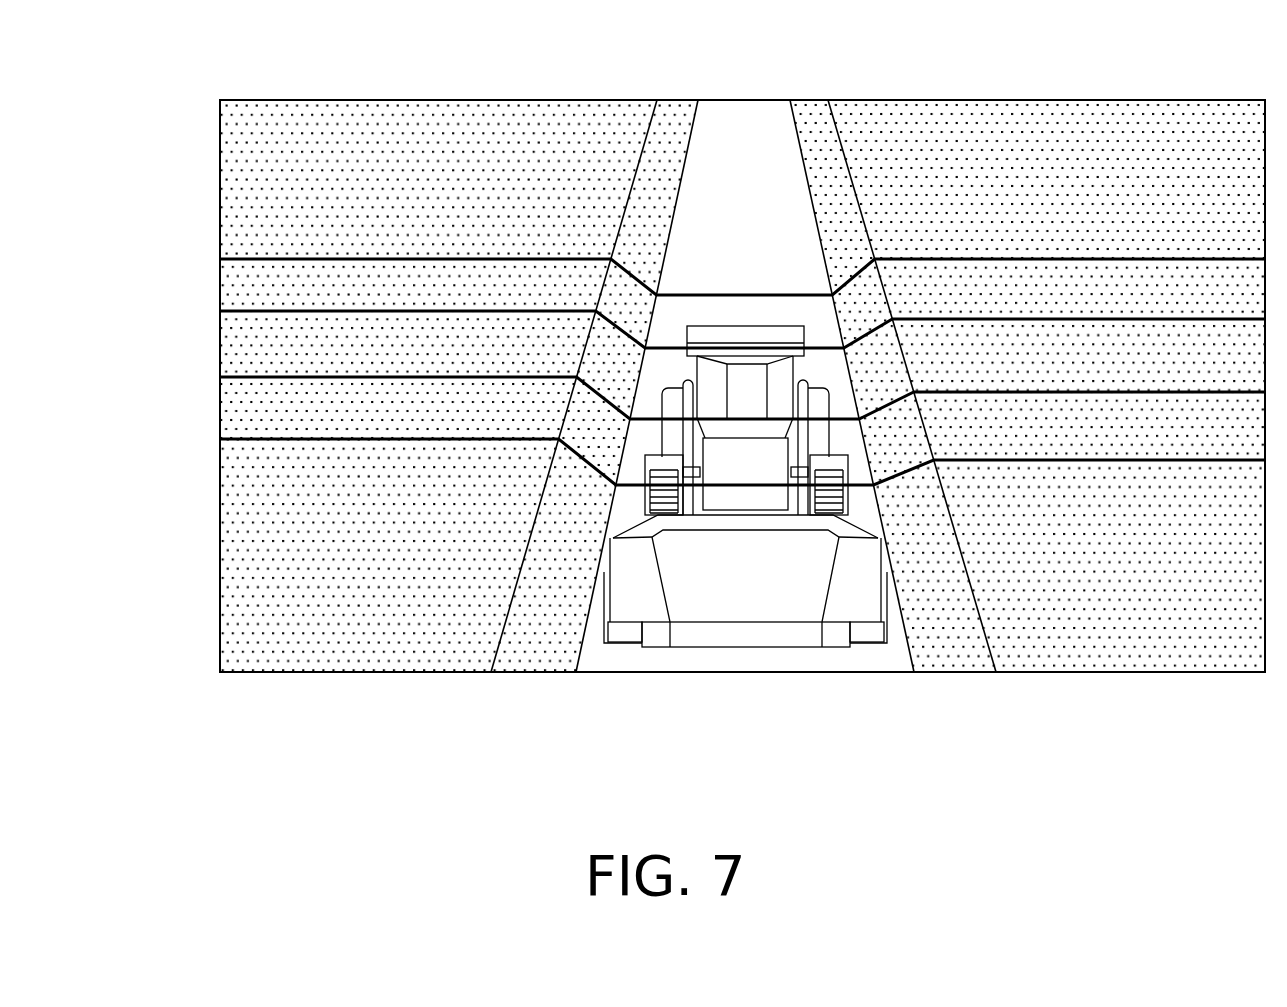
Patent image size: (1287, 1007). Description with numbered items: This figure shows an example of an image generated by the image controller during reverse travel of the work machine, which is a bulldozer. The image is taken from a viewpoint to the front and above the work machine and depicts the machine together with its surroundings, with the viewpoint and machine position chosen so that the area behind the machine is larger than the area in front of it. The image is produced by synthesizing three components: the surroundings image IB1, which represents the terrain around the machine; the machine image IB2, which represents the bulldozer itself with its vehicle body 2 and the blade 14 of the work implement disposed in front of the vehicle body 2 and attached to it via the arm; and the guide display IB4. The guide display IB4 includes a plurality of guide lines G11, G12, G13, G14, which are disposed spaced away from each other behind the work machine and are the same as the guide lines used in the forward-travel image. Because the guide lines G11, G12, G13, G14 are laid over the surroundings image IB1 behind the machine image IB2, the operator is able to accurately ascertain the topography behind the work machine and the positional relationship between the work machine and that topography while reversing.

The vehicle body 2 is at (767, 447).
The surroundings image IB1 is at (800, 214).
The guide line G14 is at (247, 258).
The guide line G13 is at (246, 310).
The guide line G12 is at (246, 376).
The guide line G11 is at (250, 439).
The guide display IB4 is at (427, 461).
The blade 14 is at (707, 603).
The machine image IB2 is at (772, 659).